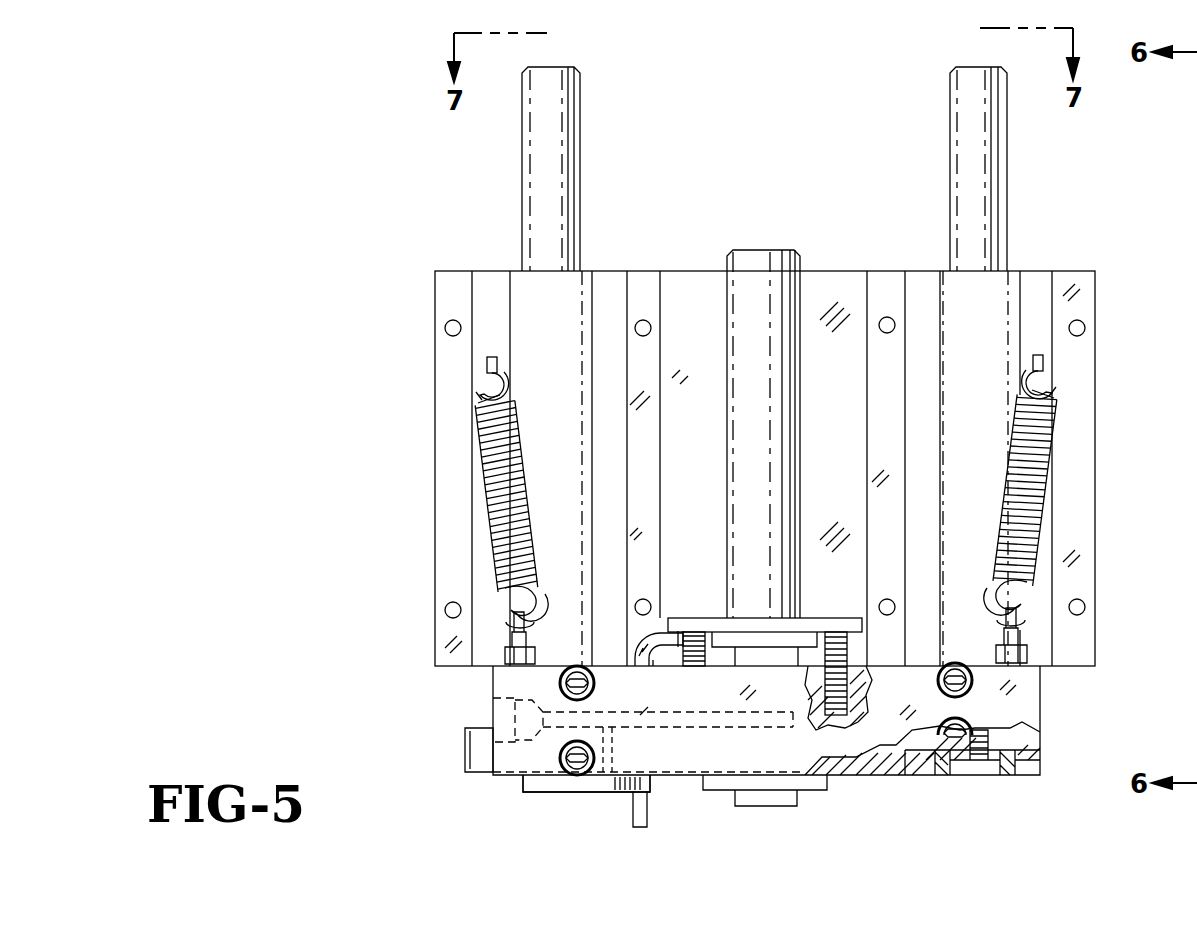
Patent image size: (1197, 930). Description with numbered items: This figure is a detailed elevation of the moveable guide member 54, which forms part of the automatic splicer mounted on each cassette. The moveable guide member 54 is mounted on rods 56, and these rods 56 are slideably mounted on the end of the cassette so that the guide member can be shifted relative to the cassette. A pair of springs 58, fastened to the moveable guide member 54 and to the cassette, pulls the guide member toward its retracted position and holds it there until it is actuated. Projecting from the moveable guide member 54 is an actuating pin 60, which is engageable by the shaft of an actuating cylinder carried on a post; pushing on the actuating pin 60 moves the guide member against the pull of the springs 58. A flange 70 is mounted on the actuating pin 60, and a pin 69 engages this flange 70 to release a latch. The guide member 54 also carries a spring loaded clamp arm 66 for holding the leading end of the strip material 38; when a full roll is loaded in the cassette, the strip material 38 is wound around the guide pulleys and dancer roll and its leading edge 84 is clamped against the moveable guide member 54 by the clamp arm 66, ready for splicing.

The strip material 38 is at (848, 777).
The moveable guide member 54 is at (1025, 703).
The rods 56 is at (568, 172).
The springs 58 is at (487, 458).
The actuating pin 60 is at (768, 266).
The spring loaded clamp arm 66 is at (583, 780).
The pin 69 is at (650, 648).
The flange 70 is at (698, 622).
The leading edge 84 is at (880, 777).